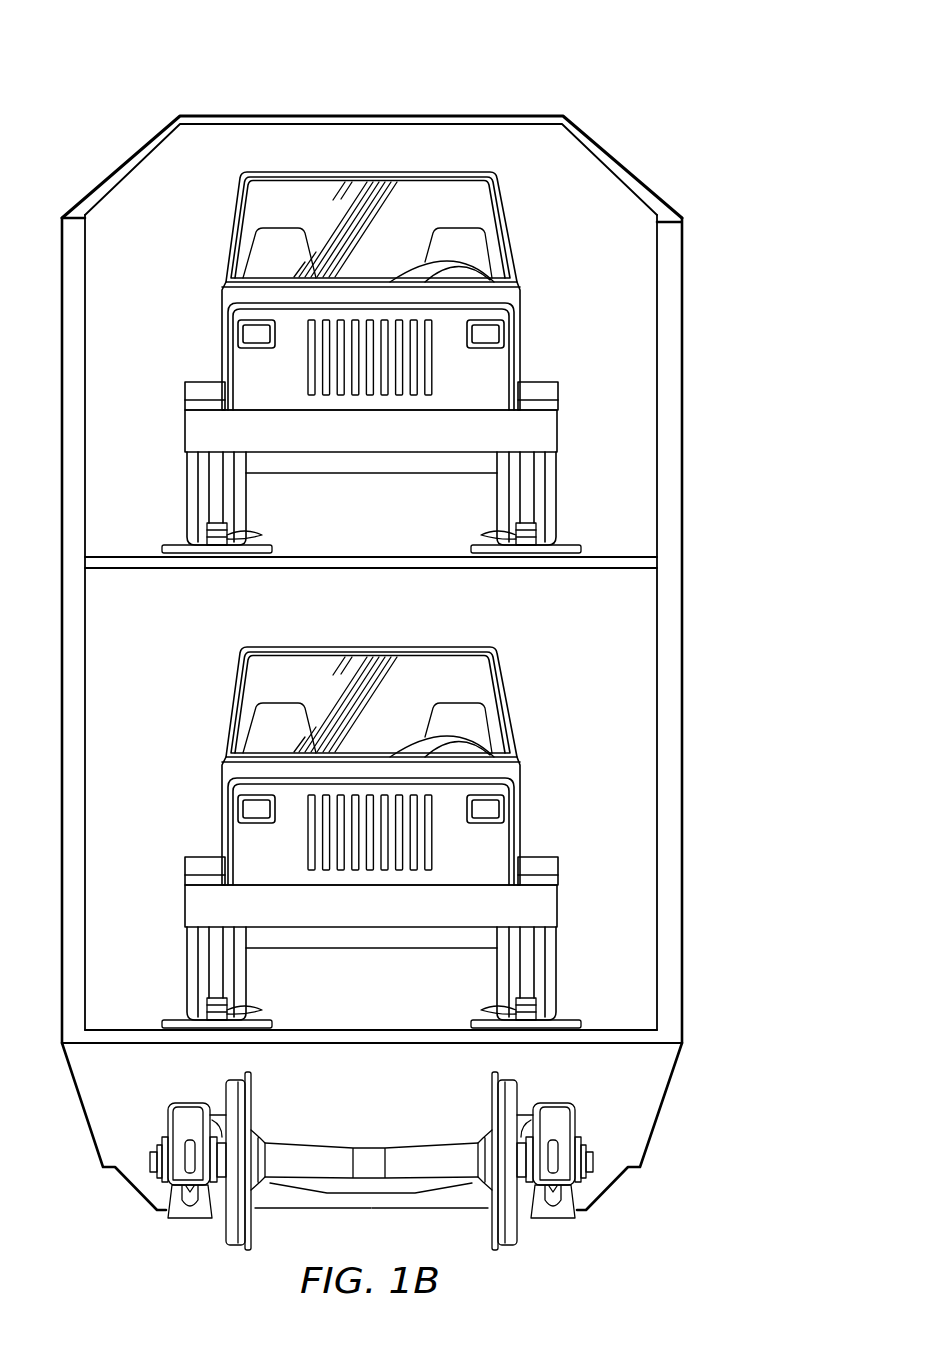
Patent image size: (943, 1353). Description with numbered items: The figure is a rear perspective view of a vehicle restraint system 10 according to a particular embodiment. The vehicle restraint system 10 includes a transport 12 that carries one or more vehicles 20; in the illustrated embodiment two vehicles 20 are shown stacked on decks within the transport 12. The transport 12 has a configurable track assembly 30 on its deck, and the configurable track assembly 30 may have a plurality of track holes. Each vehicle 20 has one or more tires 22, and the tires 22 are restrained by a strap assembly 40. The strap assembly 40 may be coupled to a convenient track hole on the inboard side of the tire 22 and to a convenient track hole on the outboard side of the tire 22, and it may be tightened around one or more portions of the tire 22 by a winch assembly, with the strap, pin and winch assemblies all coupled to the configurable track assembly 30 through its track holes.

The vehicle restraint system 10 is at (511, 61).
The transport 12 is at (238, 117).
The vehicle 20 is at (222, 300).
The tire 22 is at (187, 475).
The configurable track assembly 30 is at (170, 546).
The strap assembly 40 is at (224, 488).